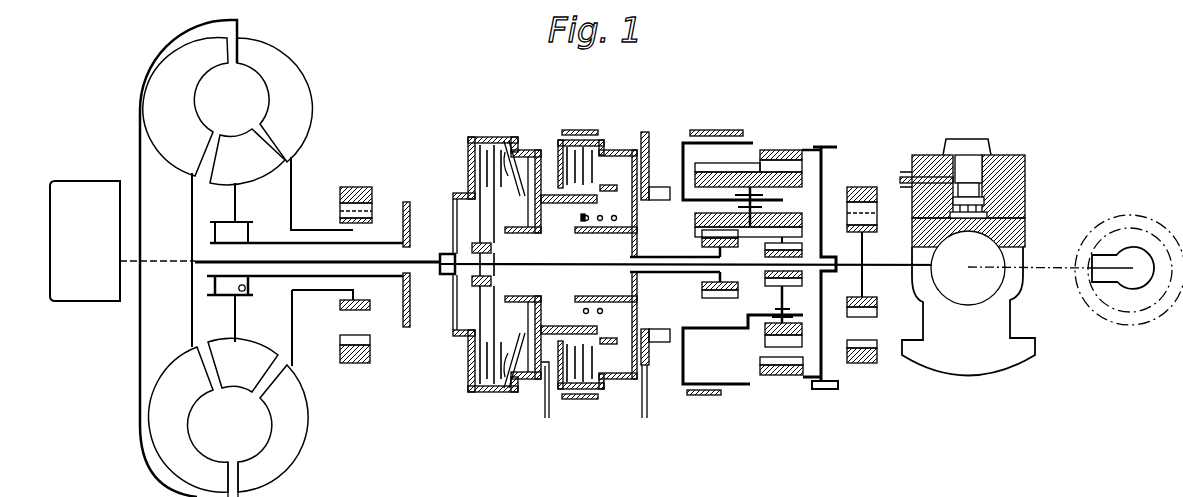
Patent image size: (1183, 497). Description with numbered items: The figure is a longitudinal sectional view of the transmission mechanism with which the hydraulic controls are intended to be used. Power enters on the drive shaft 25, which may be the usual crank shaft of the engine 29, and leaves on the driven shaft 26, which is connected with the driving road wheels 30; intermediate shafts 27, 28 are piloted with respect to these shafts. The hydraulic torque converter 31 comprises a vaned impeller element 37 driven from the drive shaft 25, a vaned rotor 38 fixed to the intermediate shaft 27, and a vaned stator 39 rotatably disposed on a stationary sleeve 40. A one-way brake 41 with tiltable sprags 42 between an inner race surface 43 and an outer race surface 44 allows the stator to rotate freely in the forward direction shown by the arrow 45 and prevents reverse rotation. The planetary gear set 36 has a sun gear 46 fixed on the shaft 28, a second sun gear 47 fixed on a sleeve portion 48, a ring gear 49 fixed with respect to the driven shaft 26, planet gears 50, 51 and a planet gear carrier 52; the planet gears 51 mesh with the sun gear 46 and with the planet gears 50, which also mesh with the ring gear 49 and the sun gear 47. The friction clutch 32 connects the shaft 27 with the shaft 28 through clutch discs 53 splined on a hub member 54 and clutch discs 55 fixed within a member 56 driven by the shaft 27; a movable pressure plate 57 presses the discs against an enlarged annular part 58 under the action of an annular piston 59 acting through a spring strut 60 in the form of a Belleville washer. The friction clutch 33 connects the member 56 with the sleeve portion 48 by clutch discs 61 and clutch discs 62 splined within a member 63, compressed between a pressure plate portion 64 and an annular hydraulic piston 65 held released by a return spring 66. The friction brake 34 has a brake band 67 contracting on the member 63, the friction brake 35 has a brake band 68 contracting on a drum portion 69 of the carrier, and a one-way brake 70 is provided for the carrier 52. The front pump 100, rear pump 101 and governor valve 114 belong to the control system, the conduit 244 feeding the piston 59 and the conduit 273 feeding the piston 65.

The drive shaft 25 is at (128, 258).
The driven shaft 26 is at (1055, 272).
The intermediate shaft 27 is at (418, 268).
The intermediate shaft 28 is at (530, 266).
The engine 29 is at (85, 241).
The driving road wheels 30 is at (1118, 330).
The hydraulic torque converter 31 is at (248, 256).
The friction clutch 32 is at (509, 247).
The friction clutch 33 is at (547, 150).
The friction brake 34 is at (610, 130).
The friction brake 35 is at (729, 123).
The planetary gear set 36 is at (747, 151).
The vaned impeller element 37 is at (290, 121).
The vaned rotor 38 is at (192, 147).
The vaned stator 39 is at (248, 165).
The stationary sleeve 40 is at (378, 242).
The one-way brake 41 is at (205, 231).
The tiltable sprags 42 is at (247, 236).
The inner race surface 43 is at (247, 281).
The outer race surface 44 is at (244, 292).
The arrow 45 is at (128, 268).
The sun gear 46 is at (805, 250).
The second sun gear 47 is at (725, 301).
The sleeve portion 48 is at (657, 252).
The ring gear 49 is at (774, 378).
The planet gears 50 is at (722, 168).
The planet gears 51 is at (760, 337).
The planet gear carrier 52 is at (688, 362).
The clutch discs 53 is at (474, 215).
The hub member 54 is at (472, 247).
The clutch discs 55 is at (468, 356).
The member 56 is at (477, 392).
The movable pressure plate 57 is at (513, 181).
The enlarged annular part 58 is at (467, 164).
The annular piston 59 is at (525, 372).
The spring strut 60 is at (512, 342).
The clutch discs 61 is at (569, 213).
The clutch discs 62 is at (588, 355).
The member 63 is at (604, 388).
The pressure plate portion 64 is at (552, 330).
The annular hydraulic piston 65 is at (637, 314).
The return spring 66 is at (599, 264).
The brake band 67 is at (575, 402).
The brake band 68 is at (704, 398).
The drum portion 69 is at (748, 388).
The one-way brake 70 is at (661, 181).
The front pump 100 is at (332, 248).
The rear pump 101 is at (871, 249).
The governor valve 114 is at (1010, 148).
The conduit 244 is at (547, 418).
The conduit 273 is at (647, 418).